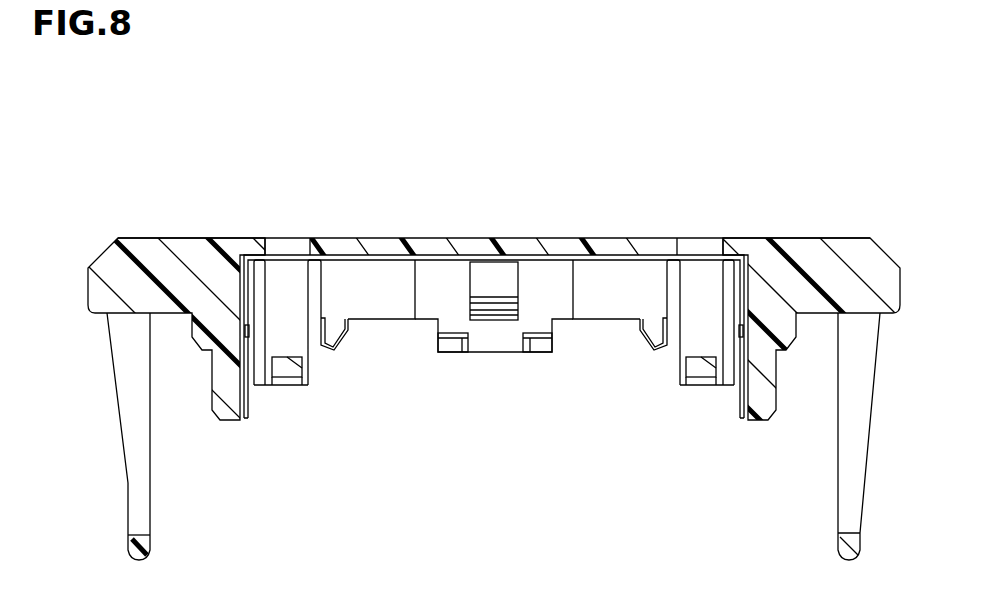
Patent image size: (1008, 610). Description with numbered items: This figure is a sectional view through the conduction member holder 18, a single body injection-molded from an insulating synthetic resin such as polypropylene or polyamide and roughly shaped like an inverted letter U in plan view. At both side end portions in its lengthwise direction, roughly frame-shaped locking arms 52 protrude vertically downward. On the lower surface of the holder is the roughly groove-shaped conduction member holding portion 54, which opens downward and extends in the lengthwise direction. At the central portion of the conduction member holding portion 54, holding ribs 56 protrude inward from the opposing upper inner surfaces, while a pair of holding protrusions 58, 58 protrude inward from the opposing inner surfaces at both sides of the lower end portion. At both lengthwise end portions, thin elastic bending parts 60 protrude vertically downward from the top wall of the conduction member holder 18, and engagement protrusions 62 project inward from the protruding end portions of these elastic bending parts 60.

The conduction member holder 18 is at (479, 156).
The locking arms 52 is at (137, 412).
The conduction member holding portion 54 is at (655, 257).
The holding ribs 56 is at (492, 282).
The holding protrusions 58 is at (447, 347).
The elastic bending parts 60 is at (285, 312).
The engagement protrusions 62 is at (287, 368).